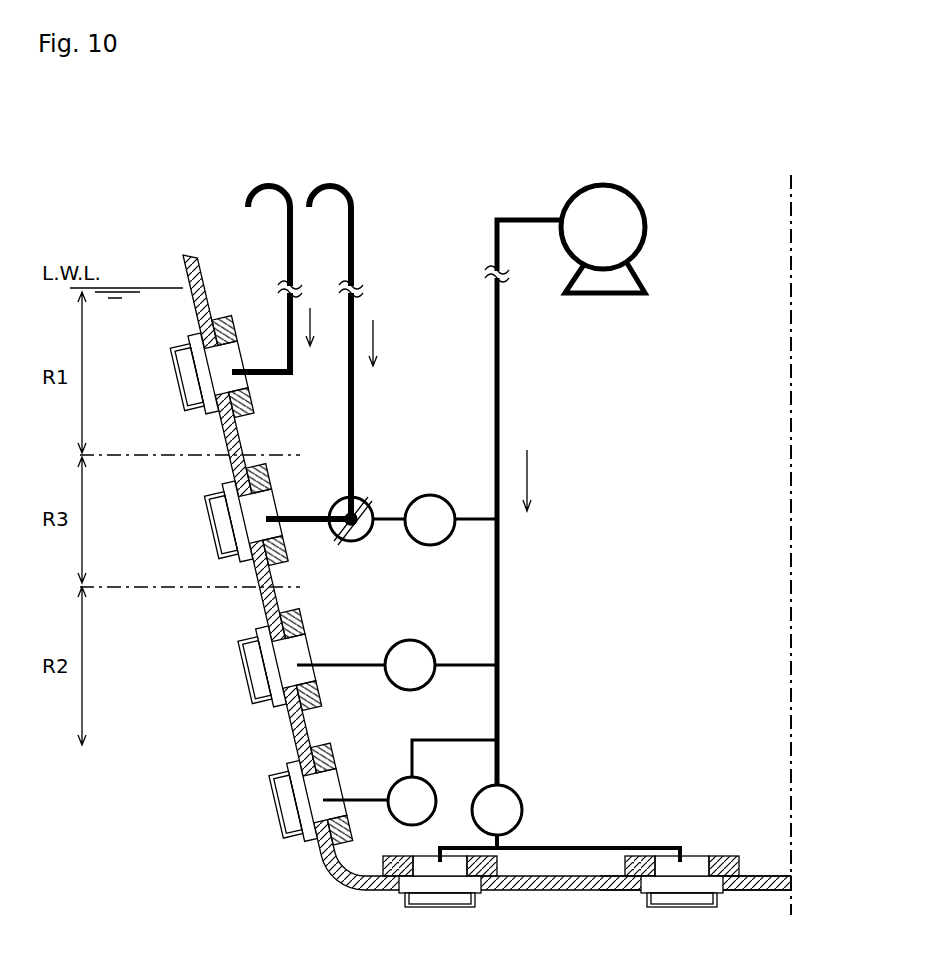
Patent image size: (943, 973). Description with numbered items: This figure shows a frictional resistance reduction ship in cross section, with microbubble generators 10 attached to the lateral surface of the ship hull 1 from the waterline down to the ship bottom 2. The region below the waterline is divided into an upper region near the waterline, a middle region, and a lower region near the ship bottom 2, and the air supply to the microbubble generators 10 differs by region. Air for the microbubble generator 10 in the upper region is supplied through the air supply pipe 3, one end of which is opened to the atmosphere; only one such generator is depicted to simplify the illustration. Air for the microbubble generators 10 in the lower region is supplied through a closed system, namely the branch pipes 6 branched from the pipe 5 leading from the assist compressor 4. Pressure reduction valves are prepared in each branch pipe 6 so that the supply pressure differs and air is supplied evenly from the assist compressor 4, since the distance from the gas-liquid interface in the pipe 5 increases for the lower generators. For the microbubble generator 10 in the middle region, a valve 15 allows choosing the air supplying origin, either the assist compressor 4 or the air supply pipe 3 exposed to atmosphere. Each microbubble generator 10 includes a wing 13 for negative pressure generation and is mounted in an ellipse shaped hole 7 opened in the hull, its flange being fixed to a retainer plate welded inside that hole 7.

The ship hull 1 is at (286, 742).
The ship bottom 2 is at (552, 894).
The air supply pipe 3 is at (287, 240).
The assist compressor 4 is at (606, 202).
The pipe 5 is at (501, 596).
The branch pipe 6 is at (467, 518).
The hole 7 is at (274, 655).
The microbubble generator 10 is at (178, 389).
The wing for negative pressure generation 13 is at (218, 535).
The switching valve 15 is at (356, 502).